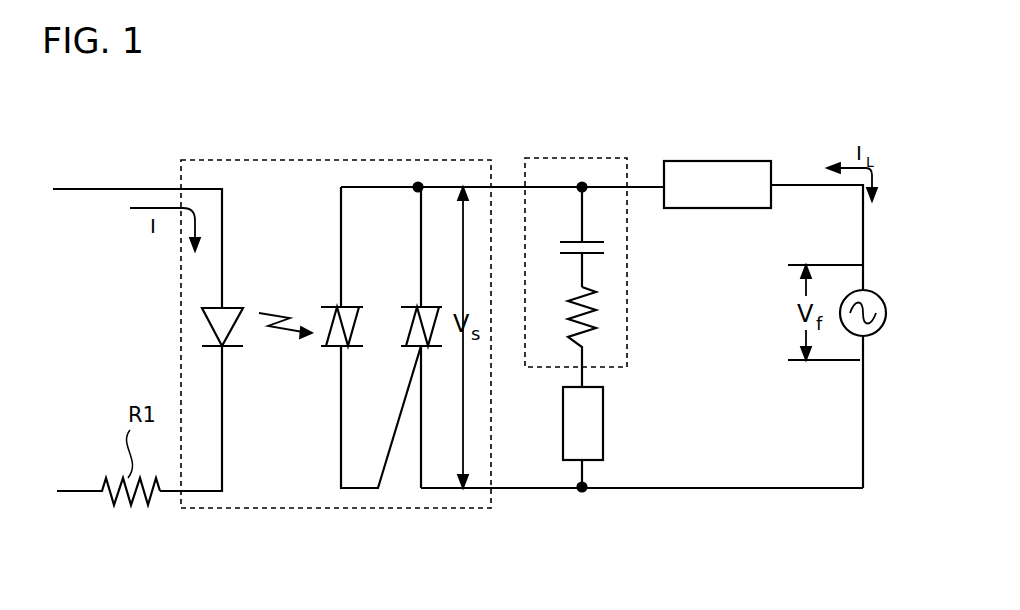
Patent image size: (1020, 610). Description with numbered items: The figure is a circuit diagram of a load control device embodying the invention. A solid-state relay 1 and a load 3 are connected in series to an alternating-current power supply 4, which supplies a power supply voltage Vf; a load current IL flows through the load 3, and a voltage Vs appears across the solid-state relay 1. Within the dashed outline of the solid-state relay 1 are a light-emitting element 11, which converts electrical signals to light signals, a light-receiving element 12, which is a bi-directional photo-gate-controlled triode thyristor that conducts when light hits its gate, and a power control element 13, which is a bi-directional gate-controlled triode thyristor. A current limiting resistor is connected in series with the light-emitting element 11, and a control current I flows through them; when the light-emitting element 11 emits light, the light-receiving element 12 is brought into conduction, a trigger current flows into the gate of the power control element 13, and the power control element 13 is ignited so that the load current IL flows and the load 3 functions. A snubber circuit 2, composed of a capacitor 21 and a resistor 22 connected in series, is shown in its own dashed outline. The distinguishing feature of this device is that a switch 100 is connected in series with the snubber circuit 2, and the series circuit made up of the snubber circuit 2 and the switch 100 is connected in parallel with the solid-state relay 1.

The solid-state relay 1 is at (322, 160).
The snubber circuit 2 is at (618, 157).
The load 3 is at (745, 161).
The alternating-current power supply 4 is at (877, 334).
The light-emitting element 11 is at (205, 318).
The light-receiving element 12 is at (327, 306).
The power control element 13 is at (407, 306).
The capacitor 21 is at (604, 246).
The resistor 22 is at (597, 314).
The switch 100 is at (603, 418).